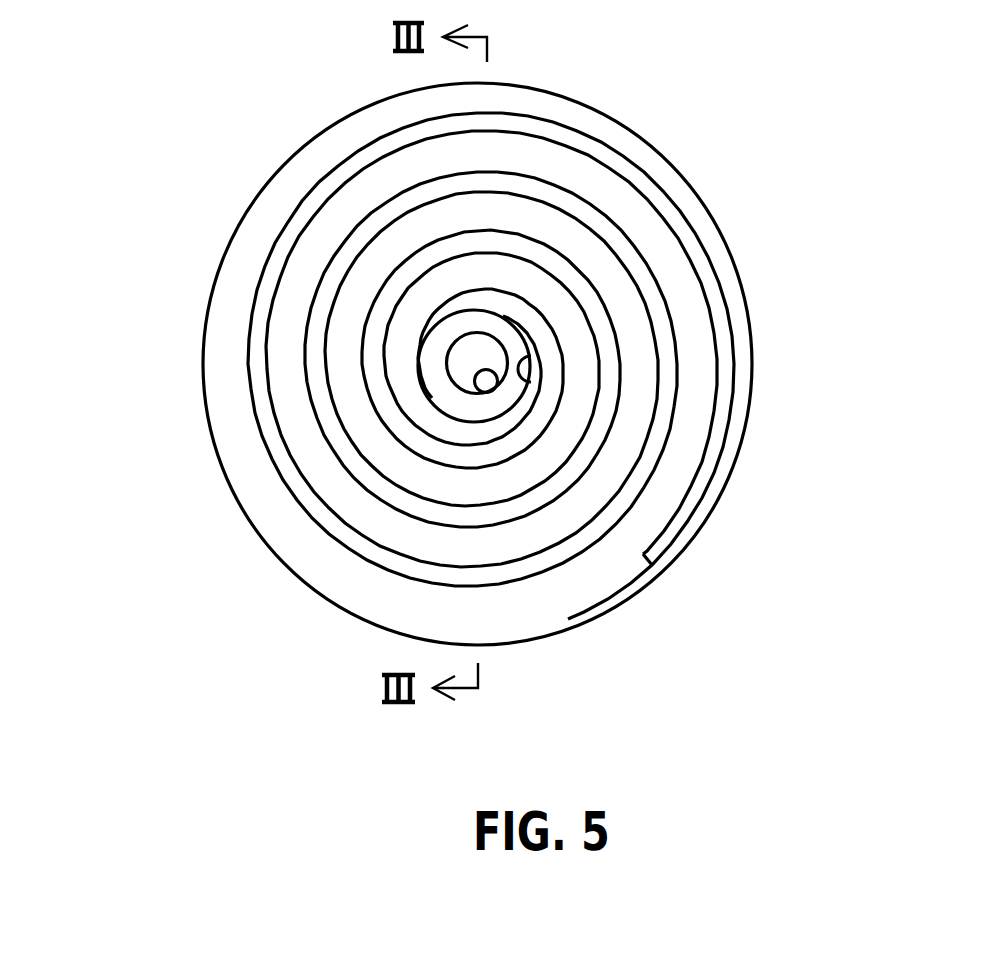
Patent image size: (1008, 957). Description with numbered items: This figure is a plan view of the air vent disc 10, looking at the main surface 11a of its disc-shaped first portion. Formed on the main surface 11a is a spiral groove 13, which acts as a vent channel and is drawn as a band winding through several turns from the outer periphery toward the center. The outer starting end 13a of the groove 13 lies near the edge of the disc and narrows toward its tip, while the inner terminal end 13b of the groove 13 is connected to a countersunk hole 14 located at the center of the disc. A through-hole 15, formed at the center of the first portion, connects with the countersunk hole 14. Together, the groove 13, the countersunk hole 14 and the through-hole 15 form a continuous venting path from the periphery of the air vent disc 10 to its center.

The air vent disc 10 is at (677, 85).
The main surface of first portion 11a is at (297, 555).
The spiral groove 13 is at (683, 227).
The starting end of groove 13a is at (650, 563).
The terminal end of groove 13b is at (440, 310).
The countersunk hole 14 is at (520, 380).
The through-hole 15 is at (476, 390).